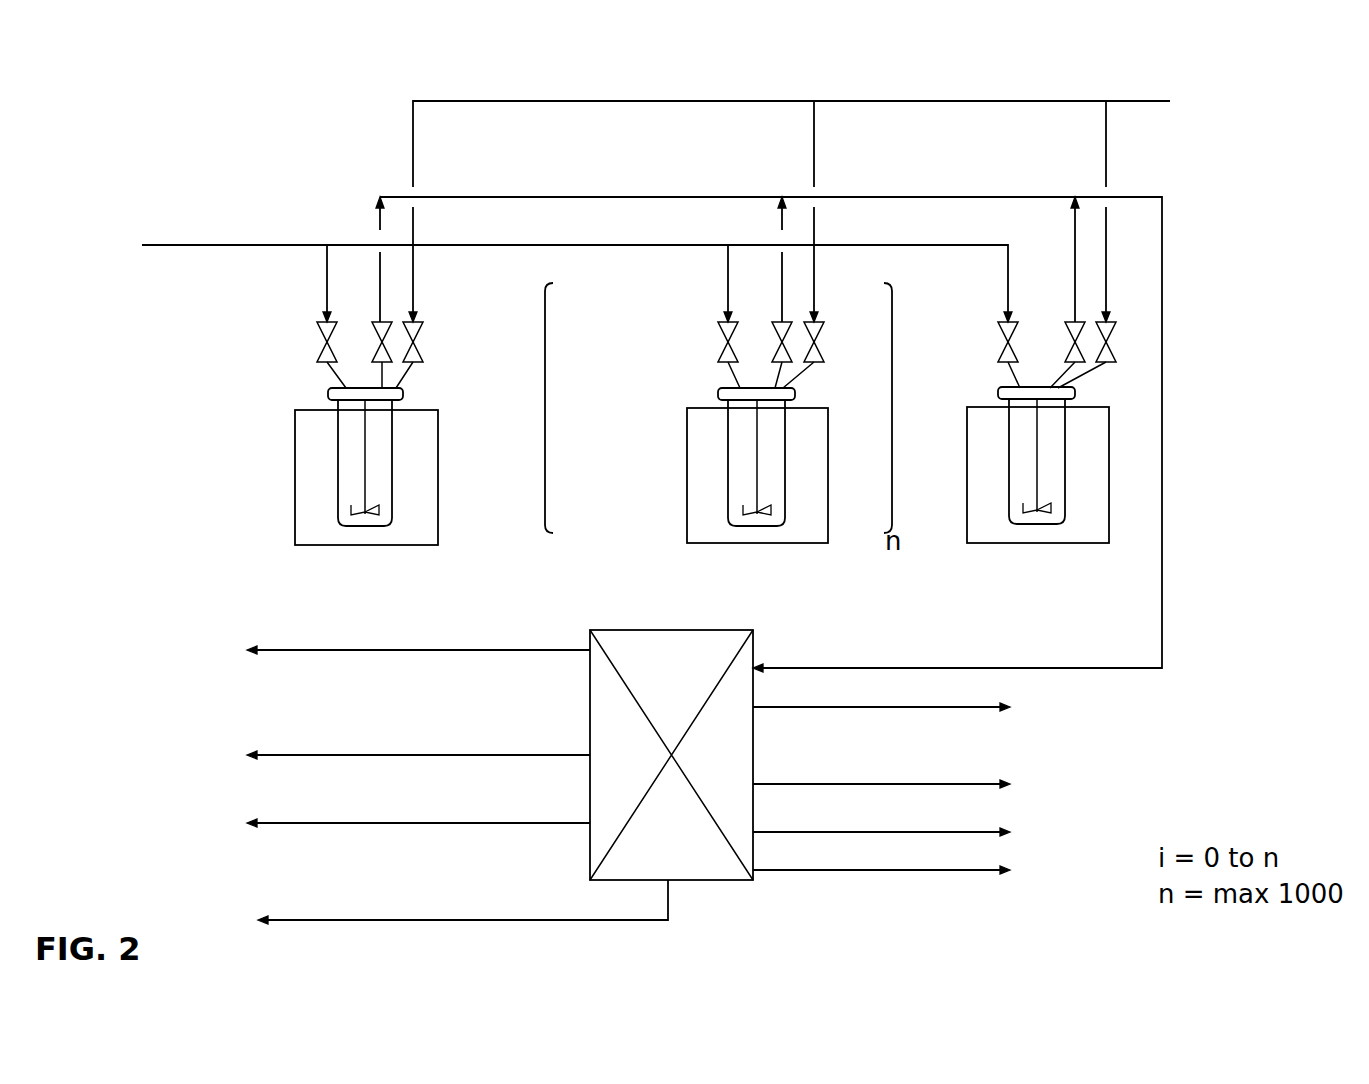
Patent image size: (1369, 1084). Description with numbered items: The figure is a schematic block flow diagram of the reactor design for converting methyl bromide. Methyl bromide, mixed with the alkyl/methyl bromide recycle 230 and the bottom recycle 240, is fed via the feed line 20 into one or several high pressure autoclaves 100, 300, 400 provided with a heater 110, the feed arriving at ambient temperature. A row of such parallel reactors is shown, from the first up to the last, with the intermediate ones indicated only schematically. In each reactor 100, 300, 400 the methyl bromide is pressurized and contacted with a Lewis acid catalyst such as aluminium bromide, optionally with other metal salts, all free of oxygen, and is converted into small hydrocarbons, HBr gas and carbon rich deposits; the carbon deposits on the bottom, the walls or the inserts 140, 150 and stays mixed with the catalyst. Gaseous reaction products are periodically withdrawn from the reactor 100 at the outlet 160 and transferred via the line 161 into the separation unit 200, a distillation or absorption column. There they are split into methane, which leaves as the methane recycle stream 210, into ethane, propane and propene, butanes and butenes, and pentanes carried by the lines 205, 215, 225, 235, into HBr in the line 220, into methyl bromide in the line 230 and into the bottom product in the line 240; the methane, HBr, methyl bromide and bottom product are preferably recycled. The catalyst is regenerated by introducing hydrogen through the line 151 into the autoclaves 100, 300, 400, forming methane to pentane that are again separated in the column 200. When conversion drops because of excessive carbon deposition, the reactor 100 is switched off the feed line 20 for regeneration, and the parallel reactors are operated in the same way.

The methyl bromide feed line 20 is at (274, 244).
The high pressure autoclave 100 is at (315, 425).
The heater 110 is at (292, 456).
The insert 140 is at (315, 336).
The insert 150 is at (420, 328).
The hydrogen line 151 is at (1157, 98).
The outlet 160 is at (372, 321).
The transfer line 161 is at (1162, 313).
The separation unit 200 is at (668, 632).
The C2 hydrocarbon line 205 is at (868, 708).
The methane recycle stream 210 is at (520, 646).
The C3 hydrocarbon line 215 is at (868, 786).
The HBr line 220 is at (512, 754).
The C4 hydrocarbon line 225 is at (868, 834).
The methyl bromide recycle line 230 is at (499, 822).
The C5 hydrocarbon line 235 is at (868, 872).
The bottom recycle line 240 is at (507, 919).
The high pressure autoclave 300 is at (708, 425).
The high pressure autoclave 400 is at (990, 425).